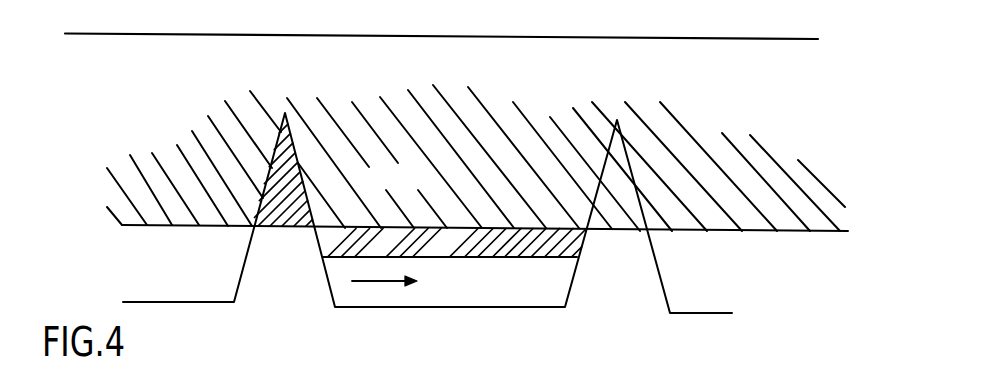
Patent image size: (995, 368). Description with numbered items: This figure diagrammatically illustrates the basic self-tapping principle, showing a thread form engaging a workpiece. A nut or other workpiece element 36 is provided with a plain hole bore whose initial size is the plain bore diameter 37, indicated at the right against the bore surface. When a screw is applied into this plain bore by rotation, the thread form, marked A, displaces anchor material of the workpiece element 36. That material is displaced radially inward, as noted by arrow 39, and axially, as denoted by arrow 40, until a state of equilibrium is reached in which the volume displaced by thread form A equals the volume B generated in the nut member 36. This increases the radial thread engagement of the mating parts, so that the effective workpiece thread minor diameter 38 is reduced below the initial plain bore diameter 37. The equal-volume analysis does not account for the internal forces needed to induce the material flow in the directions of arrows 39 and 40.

The nut or workpiece element 36 is at (367, 85).
The plain bore diameter 37 is at (833, 232).
The effective workpiece thread minor diameter 38 is at (479, 258).
The arrow indicating radial inward displacement 39 is at (377, 255).
The arrow indicating axial displacement 40 is at (378, 282).